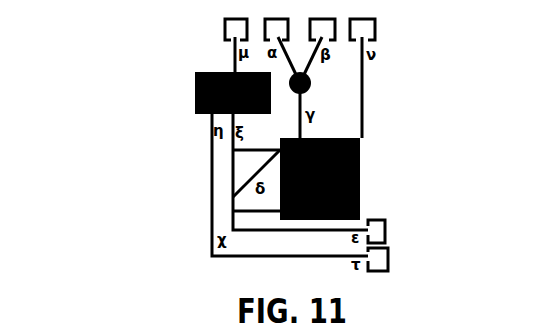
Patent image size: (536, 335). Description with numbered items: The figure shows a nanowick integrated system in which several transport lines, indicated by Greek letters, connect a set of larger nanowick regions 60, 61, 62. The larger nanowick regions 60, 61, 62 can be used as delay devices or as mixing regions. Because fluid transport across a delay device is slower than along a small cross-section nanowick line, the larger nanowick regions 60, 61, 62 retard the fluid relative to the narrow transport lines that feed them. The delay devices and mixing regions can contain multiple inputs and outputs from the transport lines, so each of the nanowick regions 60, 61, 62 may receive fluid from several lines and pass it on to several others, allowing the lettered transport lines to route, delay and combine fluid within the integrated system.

The nanowick region 60 is at (192, 88).
The nanowick region 61 is at (312, 83).
The nanowick region 62 is at (361, 173).